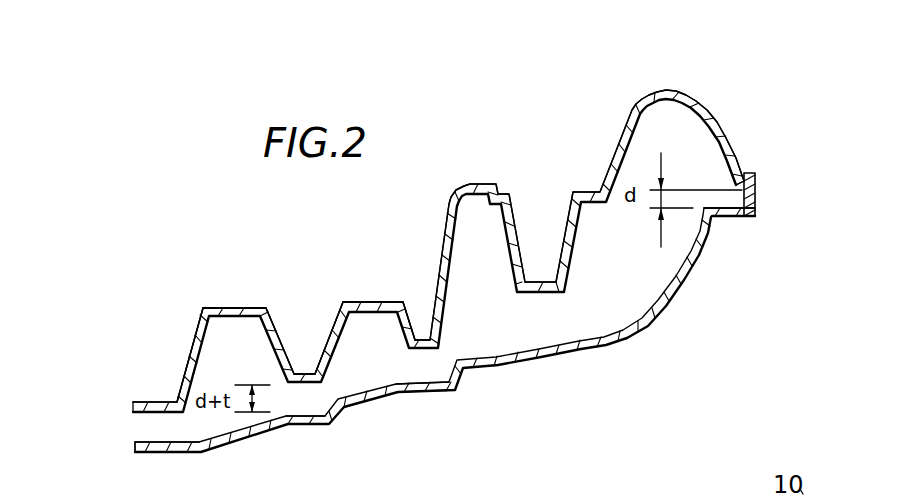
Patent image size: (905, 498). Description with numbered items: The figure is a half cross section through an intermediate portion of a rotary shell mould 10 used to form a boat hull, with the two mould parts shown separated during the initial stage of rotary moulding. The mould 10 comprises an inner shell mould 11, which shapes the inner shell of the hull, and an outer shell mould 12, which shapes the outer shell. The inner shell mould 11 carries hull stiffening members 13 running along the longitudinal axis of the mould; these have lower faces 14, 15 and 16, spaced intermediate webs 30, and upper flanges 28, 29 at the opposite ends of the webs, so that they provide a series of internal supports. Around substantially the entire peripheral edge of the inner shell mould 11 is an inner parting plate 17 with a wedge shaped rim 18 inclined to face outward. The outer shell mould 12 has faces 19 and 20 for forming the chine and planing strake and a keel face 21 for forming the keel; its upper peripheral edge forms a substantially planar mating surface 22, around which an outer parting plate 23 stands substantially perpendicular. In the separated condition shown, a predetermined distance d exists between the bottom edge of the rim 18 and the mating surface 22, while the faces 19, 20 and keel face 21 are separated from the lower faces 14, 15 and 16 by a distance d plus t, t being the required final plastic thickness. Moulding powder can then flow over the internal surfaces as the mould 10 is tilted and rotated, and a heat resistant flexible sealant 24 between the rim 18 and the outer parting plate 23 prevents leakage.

The rotary shell mould 10 is at (716, 86).
The inner shell mould 11 is at (613, 150).
The outer shell mould 12 is at (497, 366).
The hull stiffening members 13 is at (332, 294).
The lower face 14 is at (428, 352).
The lower face 15 is at (318, 384).
The lower face 16 is at (164, 414).
The inner parting plate 17 is at (737, 178).
The wedge shaped rim 18 is at (756, 188).
The face 19 is at (396, 383).
The face 20 is at (296, 408).
The keel face 21 is at (137, 442).
The mating surface 22 is at (722, 207).
The outer parting plate 23 is at (757, 214).
The heat resistant flexible sealant 24 is at (741, 176).
The upper flange 28 is at (377, 302).
The upper flange 29 is at (234, 307).
The intermediate webs 30 is at (187, 352).